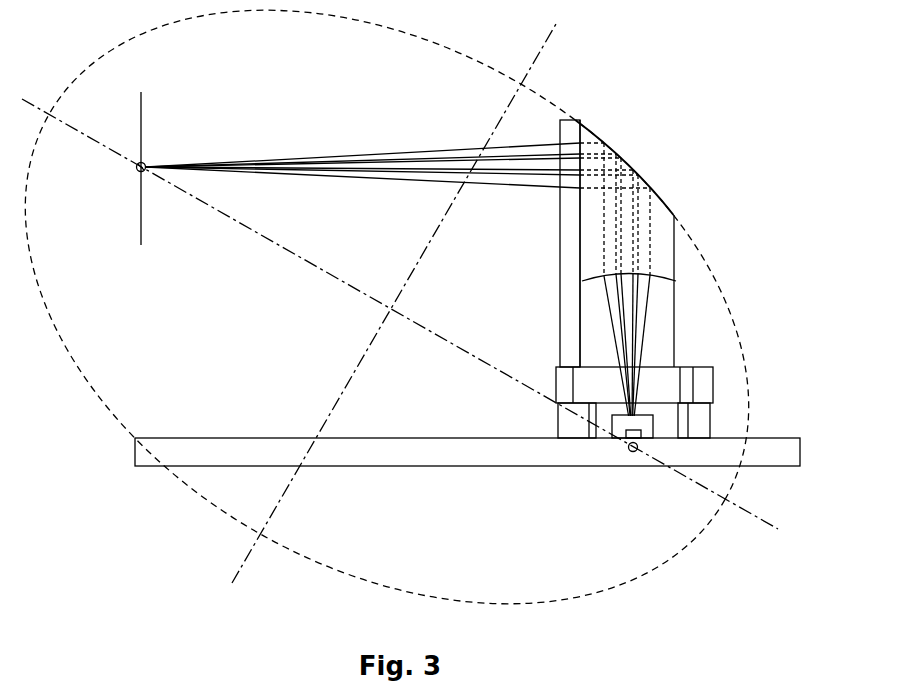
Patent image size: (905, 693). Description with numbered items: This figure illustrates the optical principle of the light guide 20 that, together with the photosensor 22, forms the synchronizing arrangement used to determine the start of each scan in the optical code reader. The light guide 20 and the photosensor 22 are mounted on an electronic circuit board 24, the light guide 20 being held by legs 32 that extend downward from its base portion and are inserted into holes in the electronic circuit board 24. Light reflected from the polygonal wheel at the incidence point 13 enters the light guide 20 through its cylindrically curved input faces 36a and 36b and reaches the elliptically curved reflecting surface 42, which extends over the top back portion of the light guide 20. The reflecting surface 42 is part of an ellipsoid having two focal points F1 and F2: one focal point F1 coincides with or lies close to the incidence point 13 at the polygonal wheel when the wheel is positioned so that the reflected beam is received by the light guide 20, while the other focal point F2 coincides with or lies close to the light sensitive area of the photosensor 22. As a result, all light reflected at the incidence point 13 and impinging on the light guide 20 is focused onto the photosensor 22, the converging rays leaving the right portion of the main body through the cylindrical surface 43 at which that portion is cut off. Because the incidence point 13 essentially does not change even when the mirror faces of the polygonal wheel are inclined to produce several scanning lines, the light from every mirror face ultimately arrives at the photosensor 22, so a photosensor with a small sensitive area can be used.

The incidence point 13 is at (150, 162).
The light guide 20 is at (540, 287).
The photosensor 22 is at (658, 419).
The electronic circuit board 24 is at (406, 437).
The legs 32 is at (573, 428).
The cylindrically curved input face 36a is at (571, 127).
The cylindrically curved input face 36b is at (579, 205).
The elliptically curved reflecting surface 42 is at (626, 162).
The cylindrical surface 43 is at (652, 283).
The focal point F1 is at (150, 173).
The focal point F2 is at (629, 451).